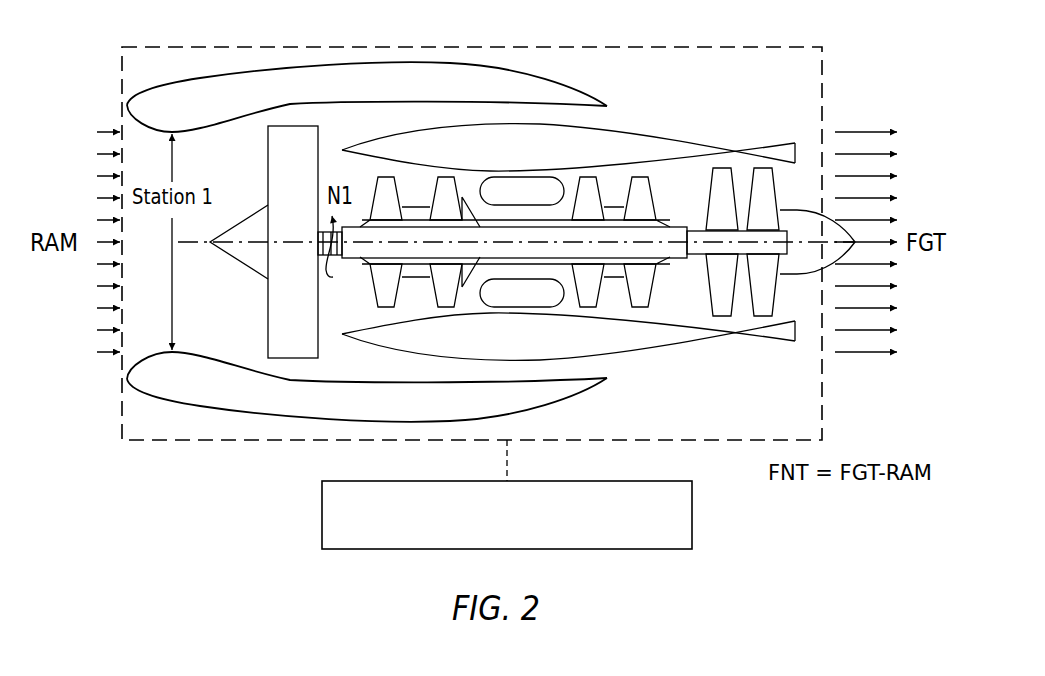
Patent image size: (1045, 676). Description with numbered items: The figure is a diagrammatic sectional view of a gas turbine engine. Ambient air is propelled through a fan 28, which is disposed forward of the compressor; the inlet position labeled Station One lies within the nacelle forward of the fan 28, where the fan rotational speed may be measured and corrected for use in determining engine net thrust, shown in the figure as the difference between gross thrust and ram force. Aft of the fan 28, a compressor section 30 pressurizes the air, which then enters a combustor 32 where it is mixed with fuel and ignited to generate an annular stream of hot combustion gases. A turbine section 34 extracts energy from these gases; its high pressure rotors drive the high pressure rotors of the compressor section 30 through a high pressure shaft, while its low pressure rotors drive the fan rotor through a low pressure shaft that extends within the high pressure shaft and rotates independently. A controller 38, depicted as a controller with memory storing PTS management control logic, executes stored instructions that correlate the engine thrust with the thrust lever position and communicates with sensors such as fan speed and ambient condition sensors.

The fan 28 is at (308, 342).
The compressor section 30 is at (367, 165).
The combustor 32 is at (532, 177).
The turbine section 34 is at (678, 185).
The controller 38 is at (693, 512).